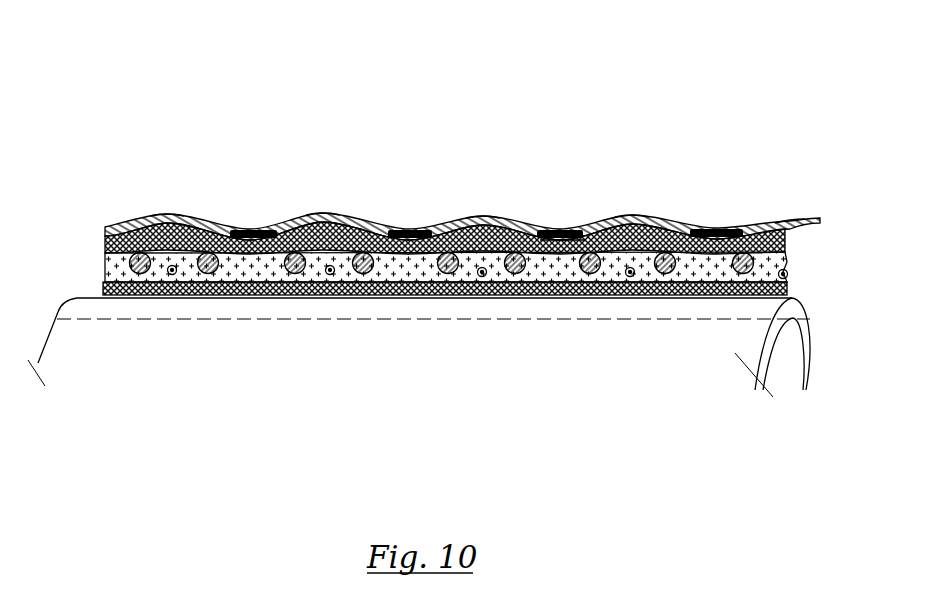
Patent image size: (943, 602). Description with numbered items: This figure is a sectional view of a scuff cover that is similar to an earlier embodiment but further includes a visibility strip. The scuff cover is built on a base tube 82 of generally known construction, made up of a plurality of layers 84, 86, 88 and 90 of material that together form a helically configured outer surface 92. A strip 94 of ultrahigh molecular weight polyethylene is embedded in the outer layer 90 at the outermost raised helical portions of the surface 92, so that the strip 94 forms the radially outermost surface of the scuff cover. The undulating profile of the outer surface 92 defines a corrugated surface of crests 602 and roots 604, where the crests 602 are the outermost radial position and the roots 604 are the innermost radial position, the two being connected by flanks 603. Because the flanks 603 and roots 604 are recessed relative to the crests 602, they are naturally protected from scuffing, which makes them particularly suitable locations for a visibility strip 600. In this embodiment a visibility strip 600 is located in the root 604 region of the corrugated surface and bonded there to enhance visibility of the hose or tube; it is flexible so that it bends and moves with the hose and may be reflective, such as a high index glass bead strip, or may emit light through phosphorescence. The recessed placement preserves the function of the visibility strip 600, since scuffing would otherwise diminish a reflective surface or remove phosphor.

The base tube 82 is at (158, 341).
The layer 84 is at (227, 292).
The layer 86 is at (340, 265).
The layer 88 is at (467, 243).
The outer layer 90 is at (563, 247).
The outer surface 92 is at (238, 215).
The strip 94 is at (178, 212).
The visibility strip 600 is at (258, 228).
The crest 602 is at (463, 178).
The flank 603 is at (780, 113).
The root 604 is at (232, 148).